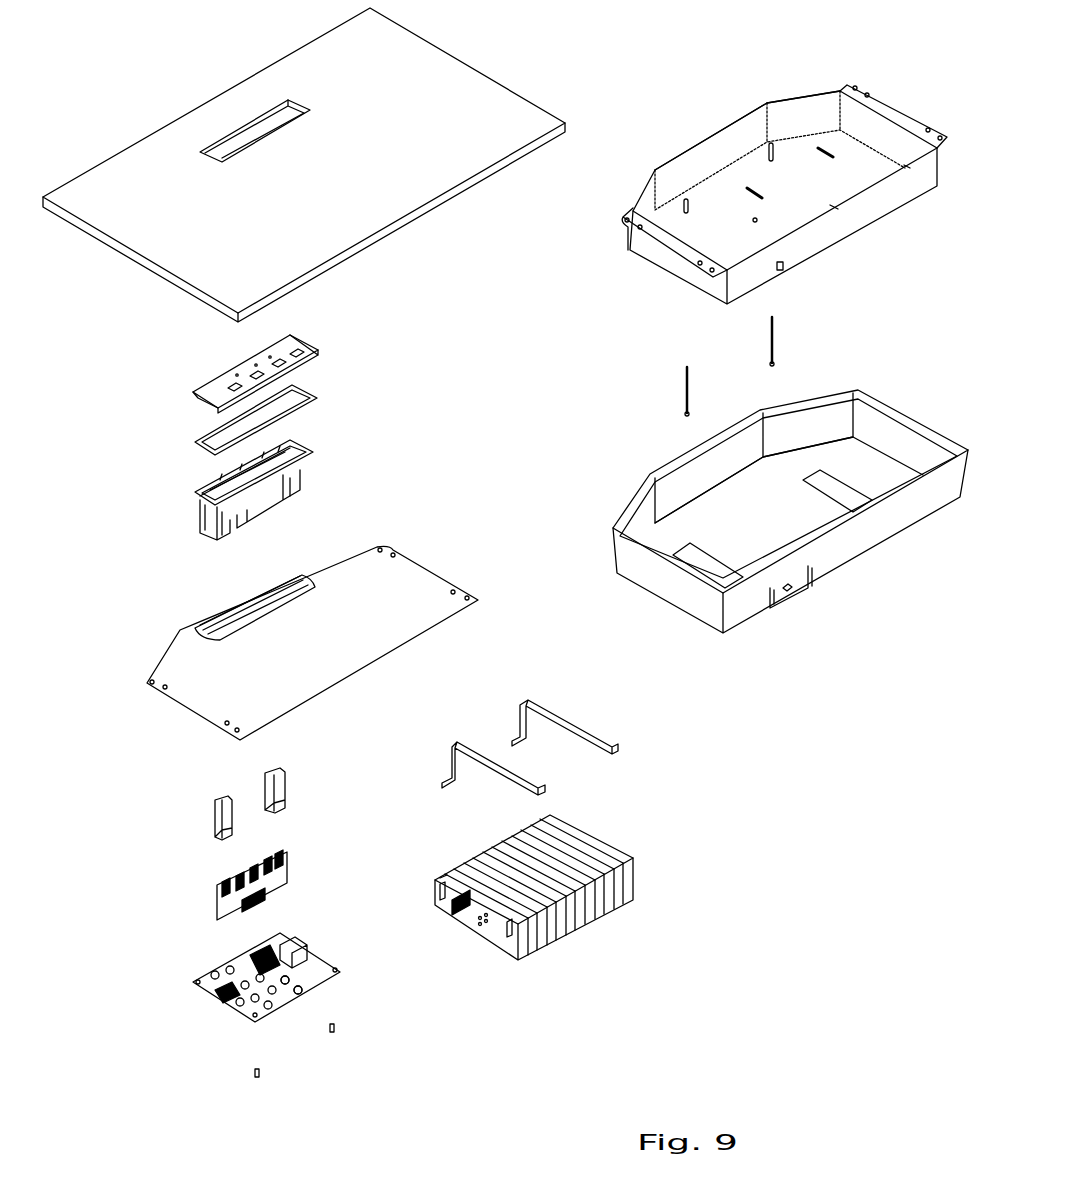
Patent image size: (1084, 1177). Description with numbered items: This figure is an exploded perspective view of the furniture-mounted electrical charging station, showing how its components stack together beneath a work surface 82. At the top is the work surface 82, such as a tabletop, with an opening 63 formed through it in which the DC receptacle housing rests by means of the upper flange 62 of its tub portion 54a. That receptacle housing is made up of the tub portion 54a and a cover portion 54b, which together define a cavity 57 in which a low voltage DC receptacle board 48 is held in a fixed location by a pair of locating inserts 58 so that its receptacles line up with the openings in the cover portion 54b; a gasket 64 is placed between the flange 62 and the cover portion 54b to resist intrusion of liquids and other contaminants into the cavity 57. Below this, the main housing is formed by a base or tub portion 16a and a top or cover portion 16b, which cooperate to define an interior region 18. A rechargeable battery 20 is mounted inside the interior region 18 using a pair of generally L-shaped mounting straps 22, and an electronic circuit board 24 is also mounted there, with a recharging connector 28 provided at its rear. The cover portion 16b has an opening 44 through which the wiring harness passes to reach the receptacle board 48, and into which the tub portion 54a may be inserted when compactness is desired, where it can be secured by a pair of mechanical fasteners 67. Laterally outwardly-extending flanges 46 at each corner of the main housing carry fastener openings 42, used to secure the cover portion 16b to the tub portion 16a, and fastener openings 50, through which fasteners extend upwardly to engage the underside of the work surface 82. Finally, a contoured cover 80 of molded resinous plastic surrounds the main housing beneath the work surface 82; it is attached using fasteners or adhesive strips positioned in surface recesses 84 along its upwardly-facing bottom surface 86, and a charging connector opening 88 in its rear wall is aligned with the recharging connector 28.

The work surface 82 is at (490, 80).
The opening 63 is at (300, 106).
The interior region 18 is at (797, 118).
The tub portion 16a is at (710, 138).
The flanges 46 is at (890, 105).
The mechanical fasteners 67 is at (773, 340).
The contoured cover 80 is at (905, 415).
The bottom surface 86 is at (745, 495).
The surface recesses 84 is at (705, 555).
The charging connector opening 88 is at (790, 595).
The cover portion 54b is at (300, 345).
The gasket 64 is at (305, 388).
The cavity 57 is at (275, 455).
The upper flange 62 is at (200, 490).
The tub portion 54a is at (305, 475).
The cover portion 16b is at (418, 575).
The opening 44 is at (237, 608).
The fastener openings 50 is at (394, 548).
The fastener openings 42 is at (468, 594).
The mounting straps 22 is at (522, 708).
The locating inserts 58 is at (275, 772).
The low voltage DC receptacle board 48 is at (280, 878).
The rechargeable battery 20 is at (595, 835).
The electronic circuit board 24 is at (250, 952).
The recharging connector 28 is at (305, 990).